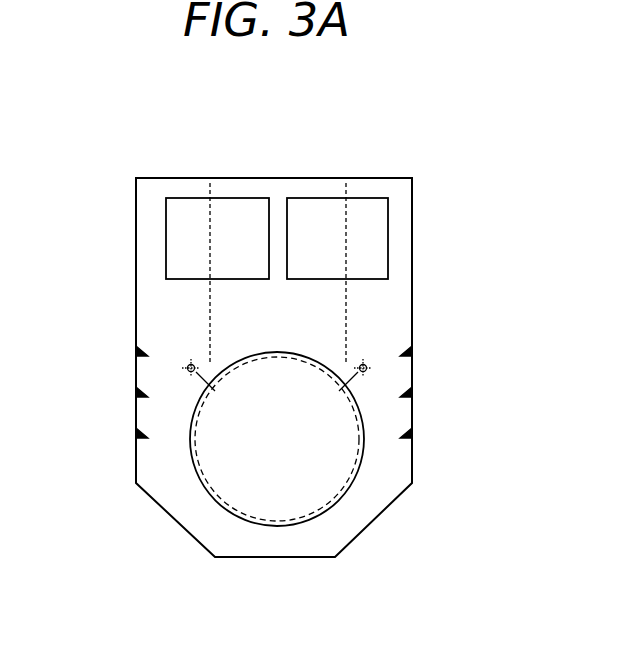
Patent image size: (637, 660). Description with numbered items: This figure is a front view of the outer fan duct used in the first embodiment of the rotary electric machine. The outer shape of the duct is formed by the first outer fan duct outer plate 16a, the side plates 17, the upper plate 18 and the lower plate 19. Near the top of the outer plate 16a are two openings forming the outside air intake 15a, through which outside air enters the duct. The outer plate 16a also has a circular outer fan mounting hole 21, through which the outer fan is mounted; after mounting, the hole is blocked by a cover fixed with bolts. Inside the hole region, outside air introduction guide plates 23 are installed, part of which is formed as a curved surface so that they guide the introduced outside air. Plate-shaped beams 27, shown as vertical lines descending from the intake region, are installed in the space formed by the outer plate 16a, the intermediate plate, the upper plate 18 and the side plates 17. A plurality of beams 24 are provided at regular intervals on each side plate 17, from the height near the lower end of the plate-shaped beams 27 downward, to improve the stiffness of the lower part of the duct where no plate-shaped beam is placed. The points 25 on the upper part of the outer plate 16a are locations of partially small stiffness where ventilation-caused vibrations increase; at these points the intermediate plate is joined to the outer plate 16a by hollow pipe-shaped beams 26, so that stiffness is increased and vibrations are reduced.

The outside air intake 15a is at (188, 198).
The first outer fan duct outer plate 16a is at (155, 303).
The side plates 17 is at (136, 240).
The upper plate 18 is at (320, 178).
The lower plate 19 is at (272, 558).
The outer fan mounting hole 21 is at (200, 482).
The outside air introduction guide plates 23 is at (222, 507).
The beam 24 is at (136, 366).
The points 25 is at (196, 364).
The pipe-shaped beam 26 is at (213, 390).
The plate-shaped beams 27 is at (345, 305).